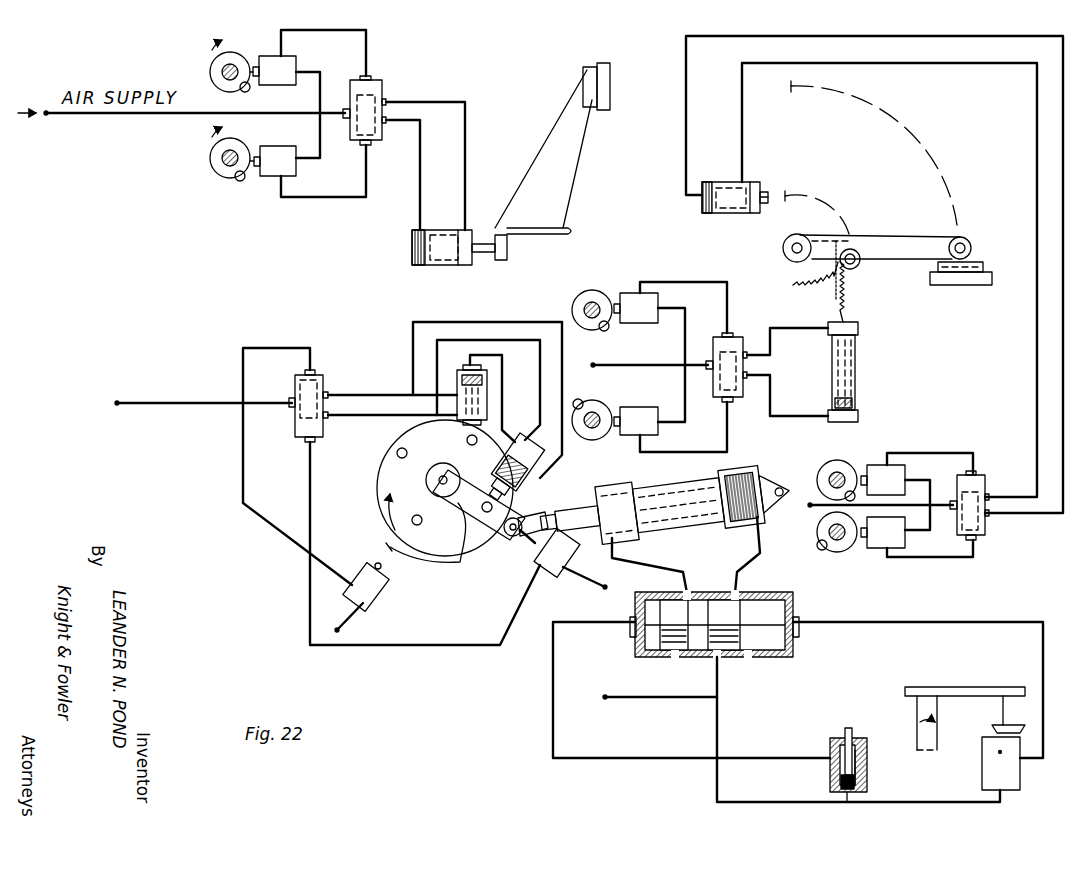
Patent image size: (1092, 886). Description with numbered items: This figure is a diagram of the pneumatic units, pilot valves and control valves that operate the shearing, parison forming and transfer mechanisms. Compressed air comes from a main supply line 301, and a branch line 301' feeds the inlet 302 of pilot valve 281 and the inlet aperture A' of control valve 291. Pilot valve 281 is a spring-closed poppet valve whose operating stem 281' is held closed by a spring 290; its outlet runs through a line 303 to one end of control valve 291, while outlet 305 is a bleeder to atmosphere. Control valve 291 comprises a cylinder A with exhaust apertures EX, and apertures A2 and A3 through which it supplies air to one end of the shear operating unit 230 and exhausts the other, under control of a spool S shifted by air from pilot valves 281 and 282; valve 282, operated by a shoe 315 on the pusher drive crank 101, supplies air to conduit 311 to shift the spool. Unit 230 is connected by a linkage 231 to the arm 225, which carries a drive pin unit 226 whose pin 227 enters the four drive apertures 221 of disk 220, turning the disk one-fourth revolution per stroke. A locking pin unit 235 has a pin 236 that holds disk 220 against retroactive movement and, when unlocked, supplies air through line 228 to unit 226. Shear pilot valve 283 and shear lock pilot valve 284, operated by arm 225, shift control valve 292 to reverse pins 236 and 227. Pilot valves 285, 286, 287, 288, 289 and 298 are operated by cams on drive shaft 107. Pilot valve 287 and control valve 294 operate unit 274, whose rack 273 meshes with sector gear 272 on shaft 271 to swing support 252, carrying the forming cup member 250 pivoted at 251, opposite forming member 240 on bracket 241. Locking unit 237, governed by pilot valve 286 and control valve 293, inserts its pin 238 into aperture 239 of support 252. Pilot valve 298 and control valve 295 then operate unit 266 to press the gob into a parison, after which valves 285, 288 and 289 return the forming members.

The drive shaft 107 is at (210, 73).
The main compressed air supply line 301 is at (498, 405).
The pilot valve 289 is at (272, 76).
The pilot valve 298 is at (278, 178).
The control valve 295 is at (375, 92).
The pneumatic unit 266 is at (440, 233).
The bracket 241 is at (555, 172).
The forming member 240 is at (605, 75).
The locking unit 237 is at (712, 214).
The pin 238 is at (768, 192).
The horizontal shaft 271 is at (786, 255).
The support 252 is at (912, 226).
The pivot 251 is at (968, 246).
The aperture 239 is at (856, 268).
The forming cup member 250 is at (975, 282).
The sector gear 272 is at (805, 272).
The rack 273 is at (850, 306).
The pneumatic unit 274 is at (860, 368).
The pilot valve 288 is at (636, 324).
The pilot valve 287 is at (656, 390).
The control valve 294 is at (740, 345).
The control valve 292 is at (323, 385).
The line 228 is at (432, 352).
The pneumatic unit 235 is at (458, 392).
The disk 220 is at (388, 476).
The drive apertures 221 is at (396, 454).
The pin 236 is at (420, 428).
The arm 225 is at (458, 557).
The linkage 231 is at (512, 540).
The pneumatic unit 226 is at (535, 470).
The drive pin 227 is at (520, 500).
The shear lock pilot valve 284 is at (385, 595).
The shear pilot valve 283 is at (545, 565).
The pneumatic unit 230 is at (680, 515).
The control valve 291 is at (770, 595).
The aperture A2 is at (688, 596).
The aperture A3 is at (738, 596).
The spool S is at (795, 612).
The exhaust apertures EX is at (675, 659).
The cylinder A is at (772, 670).
The air inlet aperture A' is at (730, 685).
The branch line 301' is at (858, 729).
The conduit 311 is at (940, 623).
The line 303 is at (828, 758).
The pilot valve 281 is at (887, 756).
The operating stem 281' is at (884, 722).
The outlet 305 is at (868, 752).
The spring 290 is at (860, 786).
The inlet 302 is at (845, 796).
The pusher drive crank 101 is at (958, 687).
The shoe 315 is at (995, 729).
The shear pilot valve 282 is at (1022, 775).
The pilot valve 285 is at (887, 464).
The pilot valve 286 is at (880, 550).
The control valve 293 is at (982, 482).